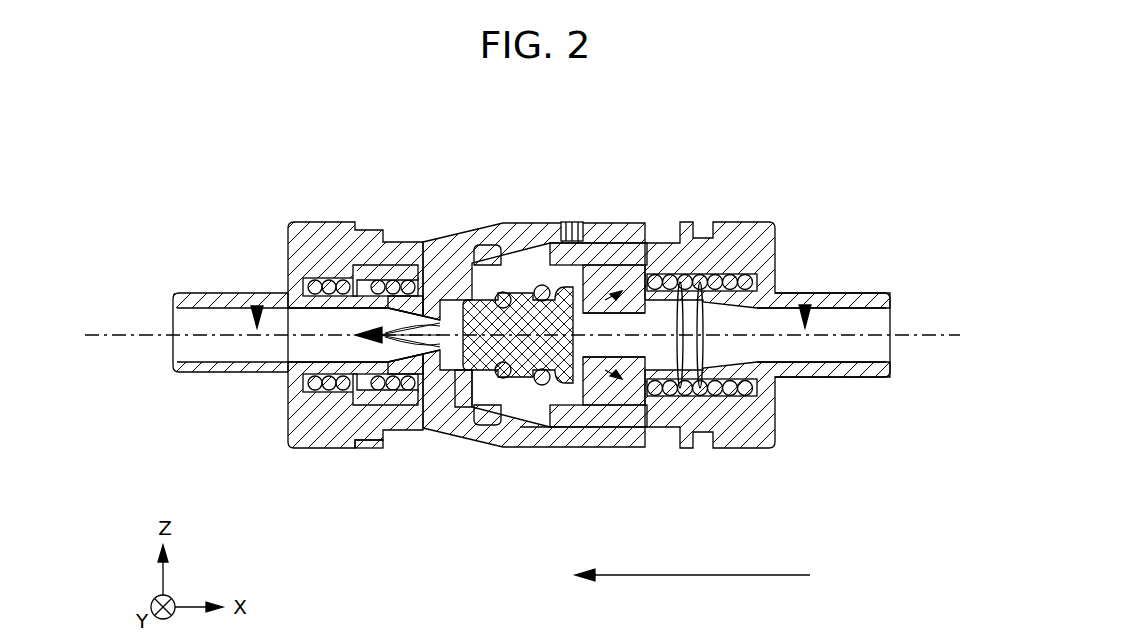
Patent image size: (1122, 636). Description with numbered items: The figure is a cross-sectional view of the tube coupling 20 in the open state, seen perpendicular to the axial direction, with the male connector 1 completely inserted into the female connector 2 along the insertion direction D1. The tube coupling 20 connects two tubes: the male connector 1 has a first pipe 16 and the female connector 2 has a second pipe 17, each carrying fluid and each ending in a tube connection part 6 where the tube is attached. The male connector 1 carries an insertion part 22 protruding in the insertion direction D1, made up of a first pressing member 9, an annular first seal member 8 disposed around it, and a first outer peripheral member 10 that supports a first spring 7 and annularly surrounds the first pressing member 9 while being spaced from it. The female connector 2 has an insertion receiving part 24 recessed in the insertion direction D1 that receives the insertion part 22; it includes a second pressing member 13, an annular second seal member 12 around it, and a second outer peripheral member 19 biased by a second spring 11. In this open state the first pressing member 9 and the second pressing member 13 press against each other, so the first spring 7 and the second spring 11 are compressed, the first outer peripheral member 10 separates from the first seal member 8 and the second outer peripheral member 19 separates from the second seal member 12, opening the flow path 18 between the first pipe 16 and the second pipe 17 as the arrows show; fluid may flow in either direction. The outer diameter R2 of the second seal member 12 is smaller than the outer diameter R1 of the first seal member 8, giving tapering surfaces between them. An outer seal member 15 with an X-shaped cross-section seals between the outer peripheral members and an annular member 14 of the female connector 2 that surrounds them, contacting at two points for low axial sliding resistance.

The male connector 1 is at (767, 351).
The female connector 2 is at (351, 352).
The tube connection part 6 is at (237, 370).
The first spring 7 is at (695, 270).
The first seal member 8 is at (536, 282).
The first pressing member 9 is at (607, 434).
The first outer peripheral member 10 is at (503, 291).
The second spring 11 is at (347, 272).
The second seal member 12 is at (463, 290).
The second pressing member 13 is at (478, 385).
The annular member 14 is at (617, 234).
The outer seal member 15 is at (487, 262).
The first pipe 16 is at (814, 293).
The second pipe 17 is at (255, 294).
The flow path 18 is at (466, 398).
The second outer peripheral member 19 is at (360, 444).
The tube coupling 20 is at (797, 160).
The insertion part 22 is at (602, 262).
The insertion receiving part 24 is at (541, 430).
The outer diameter of first seal member R1 is at (689, 230).
The outer diameter of second seal member R2 is at (402, 232).
The insertion direction D1 is at (692, 593).